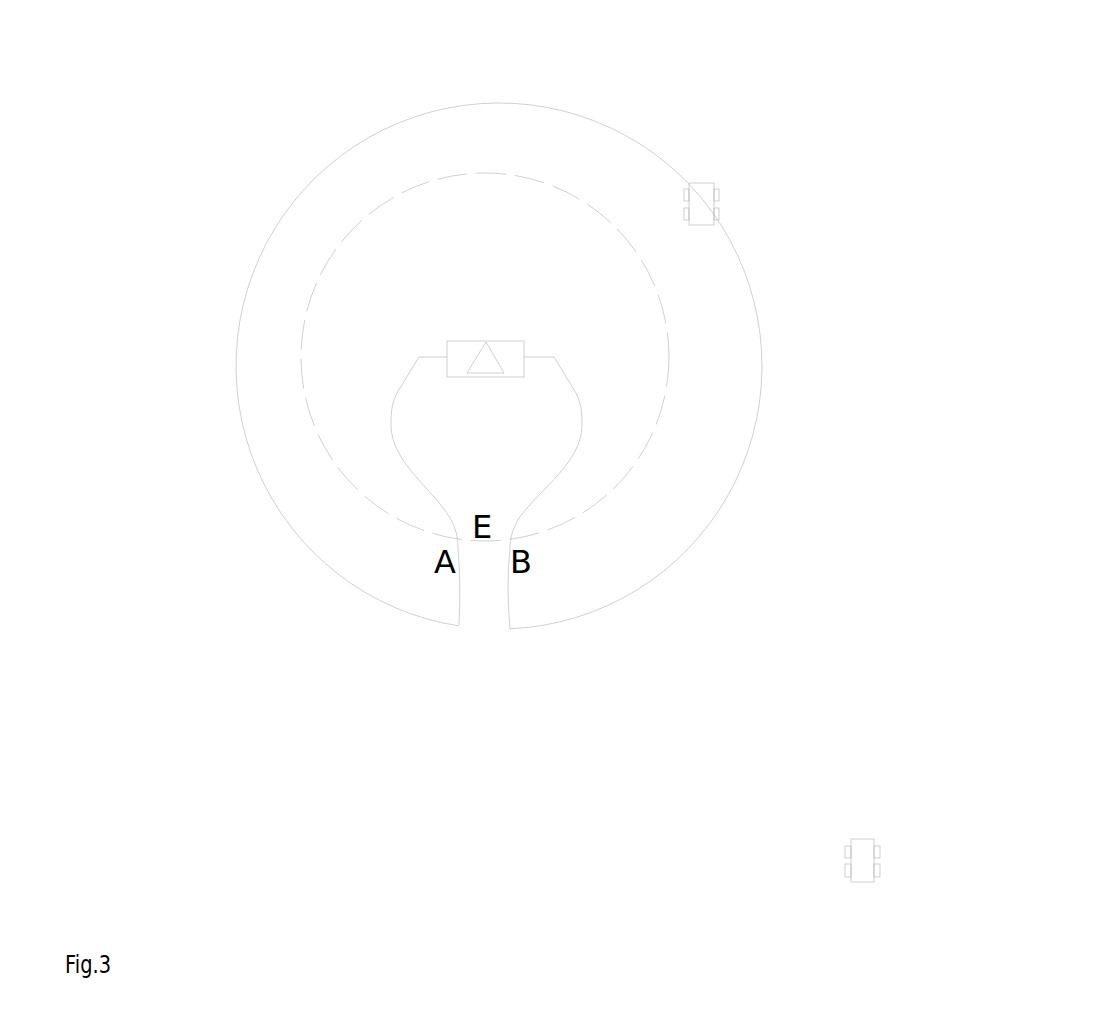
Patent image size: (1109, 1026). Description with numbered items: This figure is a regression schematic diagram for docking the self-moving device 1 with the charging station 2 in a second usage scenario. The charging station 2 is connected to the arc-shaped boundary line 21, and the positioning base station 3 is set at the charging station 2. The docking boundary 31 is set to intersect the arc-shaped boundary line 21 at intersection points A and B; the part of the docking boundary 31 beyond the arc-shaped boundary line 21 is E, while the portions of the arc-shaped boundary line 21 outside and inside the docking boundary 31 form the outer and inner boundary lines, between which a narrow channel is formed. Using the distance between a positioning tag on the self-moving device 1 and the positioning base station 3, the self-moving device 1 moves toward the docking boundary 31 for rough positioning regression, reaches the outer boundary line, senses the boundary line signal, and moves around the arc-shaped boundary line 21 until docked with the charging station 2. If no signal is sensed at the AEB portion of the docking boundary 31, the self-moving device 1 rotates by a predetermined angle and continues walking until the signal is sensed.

The self-moving device 1 is at (705, 189).
The charging station 2 is at (457, 357).
The positioning base station 3 is at (485, 358).
The arc-shaped boundary line 21 is at (587, 114).
The docking boundary 31 is at (633, 466).